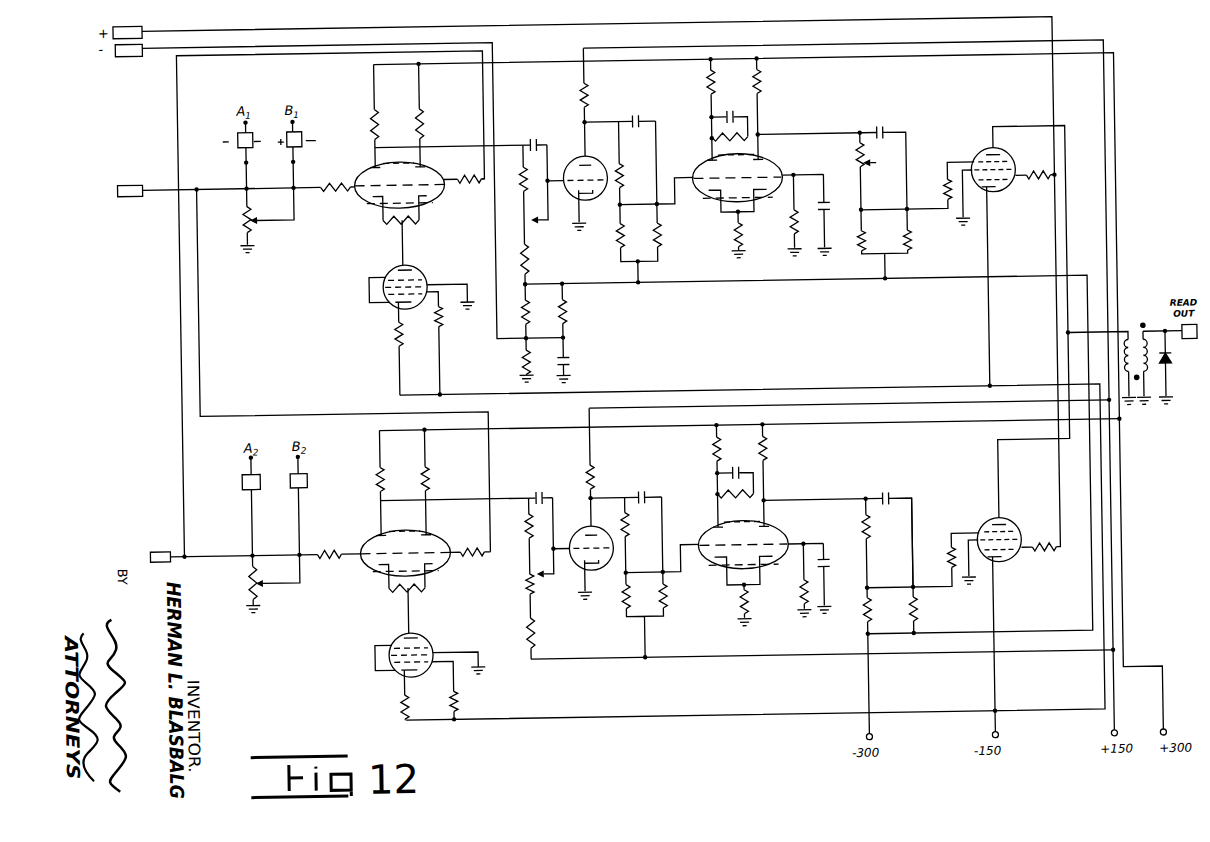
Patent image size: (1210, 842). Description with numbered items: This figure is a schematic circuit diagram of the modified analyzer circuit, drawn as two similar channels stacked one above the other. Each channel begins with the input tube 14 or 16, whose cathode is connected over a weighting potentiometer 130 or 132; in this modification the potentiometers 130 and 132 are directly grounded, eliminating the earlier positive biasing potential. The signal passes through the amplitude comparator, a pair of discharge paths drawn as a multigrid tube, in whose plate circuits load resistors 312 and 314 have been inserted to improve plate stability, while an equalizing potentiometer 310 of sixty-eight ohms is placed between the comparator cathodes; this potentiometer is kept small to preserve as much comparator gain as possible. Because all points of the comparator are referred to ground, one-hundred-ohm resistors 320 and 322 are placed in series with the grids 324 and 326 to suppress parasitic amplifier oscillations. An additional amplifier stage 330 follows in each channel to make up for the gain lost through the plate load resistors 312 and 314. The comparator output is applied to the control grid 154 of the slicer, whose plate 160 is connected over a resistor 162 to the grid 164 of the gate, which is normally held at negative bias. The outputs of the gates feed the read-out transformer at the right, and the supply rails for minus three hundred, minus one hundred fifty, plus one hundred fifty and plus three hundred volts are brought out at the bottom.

The tube 14 is at (165, 536).
The tube 16 is at (134, 178).
The potentiometer 130 is at (247, 578).
The potentiometer 132 is at (246, 213).
The control grid 154 is at (708, 198).
The plate 160 is at (767, 162).
The resistor 162 is at (866, 161).
The grid 164 is at (980, 159).
The equalizing potentiometer 310 is at (415, 224).
The load resistor 312 is at (379, 108).
The load resistor 314 is at (423, 121).
The resistor 320 is at (468, 175).
The resistor 322 is at (334, 178).
The grid 324 is at (445, 192).
The grid 326 is at (369, 191).
The additional amplifier stage 330 is at (577, 152).